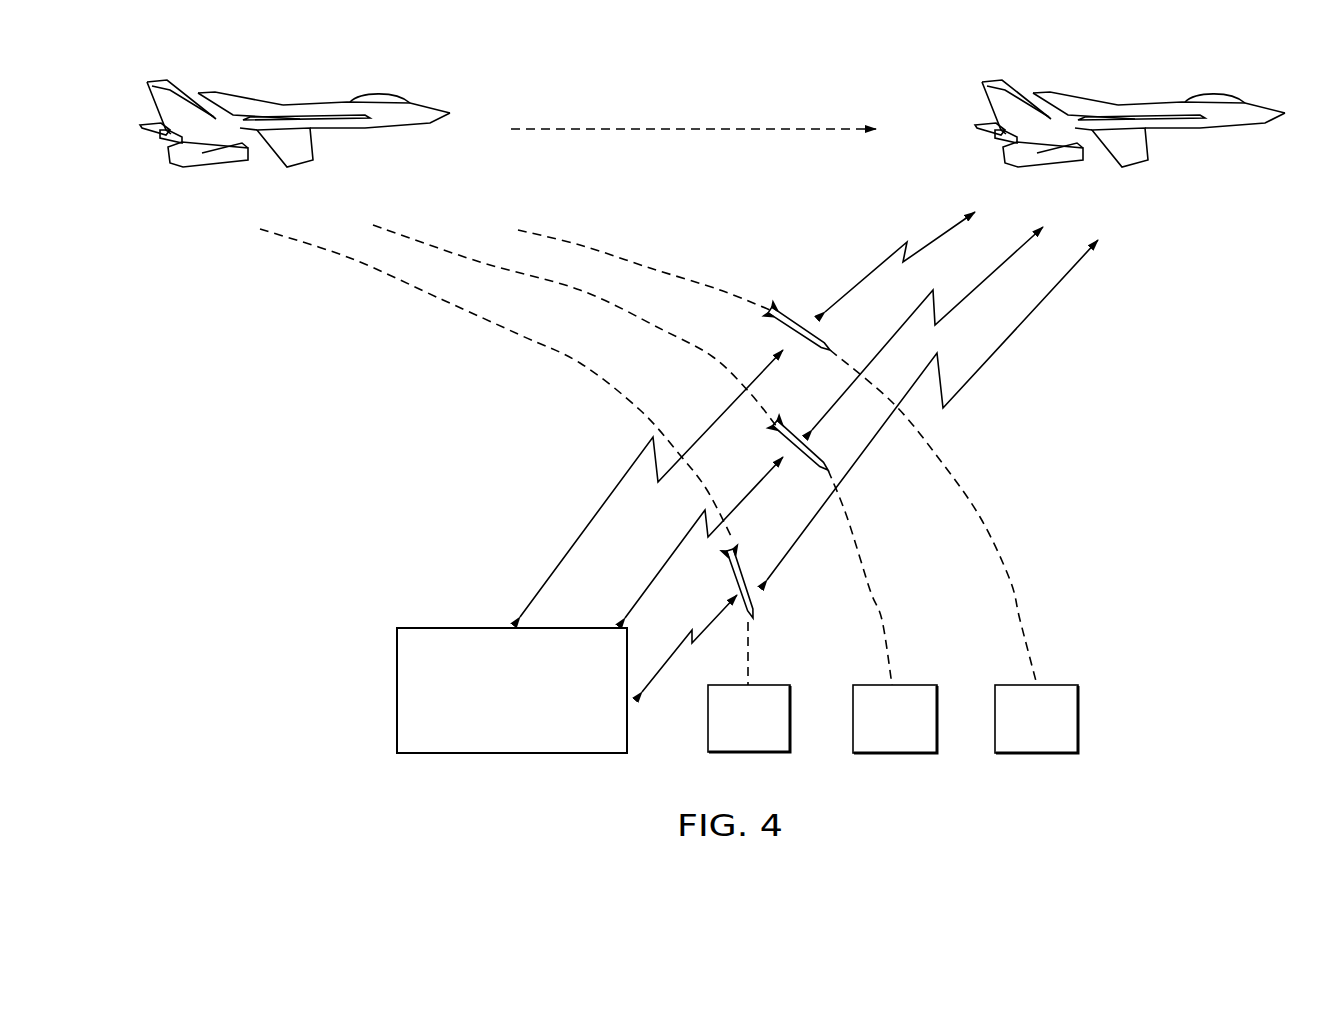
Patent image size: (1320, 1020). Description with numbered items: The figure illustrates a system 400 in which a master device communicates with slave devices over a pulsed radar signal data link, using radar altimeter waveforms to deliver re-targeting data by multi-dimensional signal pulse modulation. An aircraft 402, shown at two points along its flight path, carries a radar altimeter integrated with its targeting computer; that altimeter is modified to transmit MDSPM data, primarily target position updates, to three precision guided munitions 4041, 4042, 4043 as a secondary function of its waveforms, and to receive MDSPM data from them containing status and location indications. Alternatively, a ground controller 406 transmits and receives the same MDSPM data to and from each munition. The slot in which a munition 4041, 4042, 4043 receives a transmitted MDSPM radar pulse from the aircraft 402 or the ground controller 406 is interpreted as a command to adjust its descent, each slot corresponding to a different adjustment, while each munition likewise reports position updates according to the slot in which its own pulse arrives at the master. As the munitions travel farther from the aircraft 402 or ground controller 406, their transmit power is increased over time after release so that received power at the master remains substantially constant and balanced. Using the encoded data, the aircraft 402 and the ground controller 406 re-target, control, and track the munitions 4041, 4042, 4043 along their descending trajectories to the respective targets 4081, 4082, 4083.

The weapon guidance system 400 is at (290, 513).
The aircraft 402 is at (380, 92).
The precision guided munition 4041 is at (755, 608).
The precision guided munition 4042 is at (780, 423).
The precision guided munition 4043 is at (792, 292).
The ground controller 406 is at (423, 628).
The target 4081 is at (767, 684).
The target 4082 is at (918, 685).
The target 4083 is at (1058, 685).